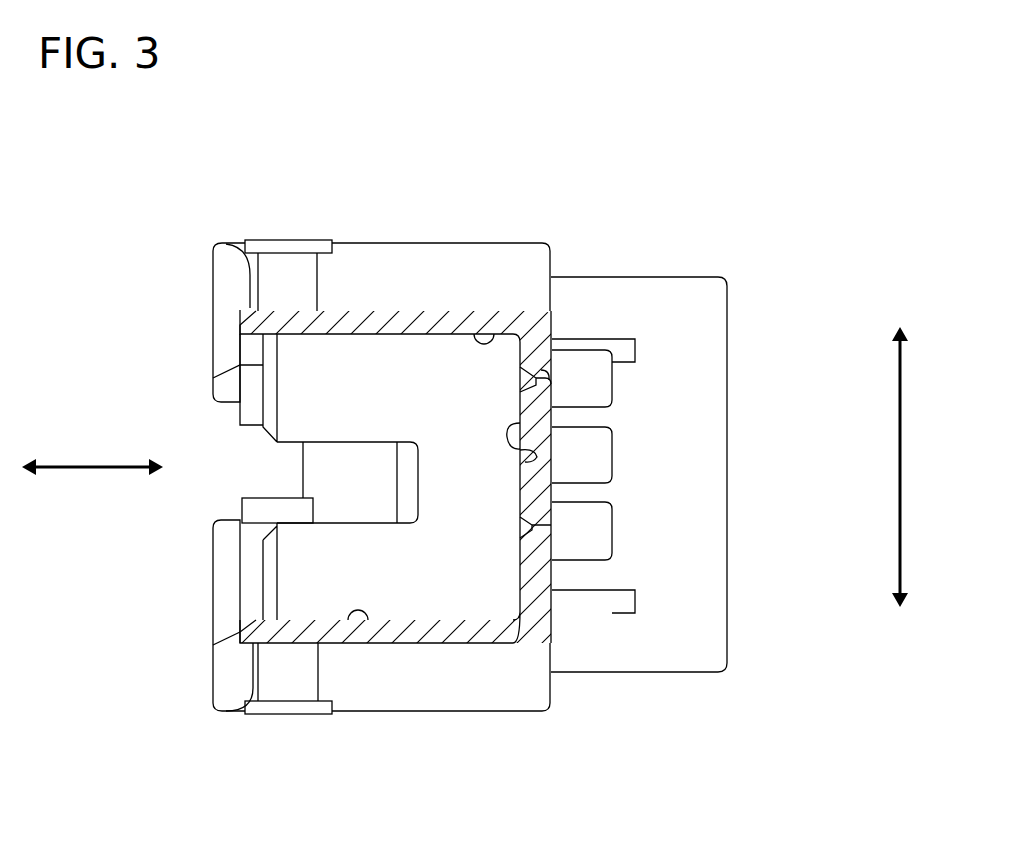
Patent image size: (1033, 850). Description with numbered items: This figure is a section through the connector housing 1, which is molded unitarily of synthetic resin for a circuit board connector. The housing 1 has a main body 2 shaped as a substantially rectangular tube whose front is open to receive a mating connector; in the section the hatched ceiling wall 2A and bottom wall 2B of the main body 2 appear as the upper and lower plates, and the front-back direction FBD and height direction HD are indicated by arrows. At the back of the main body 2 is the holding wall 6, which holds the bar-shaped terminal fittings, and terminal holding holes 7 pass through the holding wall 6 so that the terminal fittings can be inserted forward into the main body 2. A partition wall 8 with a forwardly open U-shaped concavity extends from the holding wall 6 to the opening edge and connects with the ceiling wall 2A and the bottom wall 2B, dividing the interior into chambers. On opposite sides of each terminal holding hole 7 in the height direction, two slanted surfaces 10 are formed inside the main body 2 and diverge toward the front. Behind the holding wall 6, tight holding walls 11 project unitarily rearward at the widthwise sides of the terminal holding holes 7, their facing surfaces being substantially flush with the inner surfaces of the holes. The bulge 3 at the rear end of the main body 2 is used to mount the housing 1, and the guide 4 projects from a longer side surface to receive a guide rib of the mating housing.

The housing 1 is at (662, 193).
The main body 2 is at (402, 311).
The ceiling wall 2A is at (495, 333).
The bottom wall 2B is at (348, 616).
The bulge 3 is at (682, 294).
The guide 4 is at (438, 693).
The holding wall 6 is at (538, 590).
The terminal holding hole 7 is at (552, 378).
The partition wall 8 is at (467, 585).
The slanted surface 10 is at (510, 432).
The tight holding wall 11 is at (597, 380).